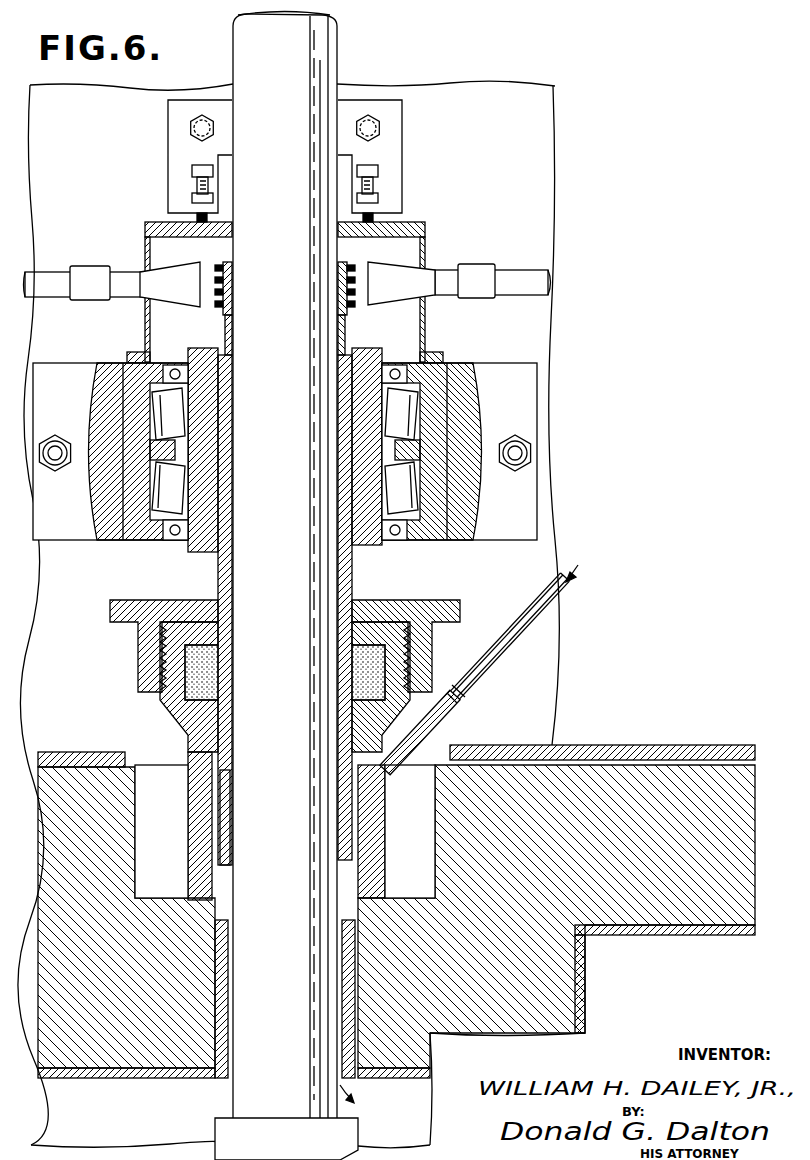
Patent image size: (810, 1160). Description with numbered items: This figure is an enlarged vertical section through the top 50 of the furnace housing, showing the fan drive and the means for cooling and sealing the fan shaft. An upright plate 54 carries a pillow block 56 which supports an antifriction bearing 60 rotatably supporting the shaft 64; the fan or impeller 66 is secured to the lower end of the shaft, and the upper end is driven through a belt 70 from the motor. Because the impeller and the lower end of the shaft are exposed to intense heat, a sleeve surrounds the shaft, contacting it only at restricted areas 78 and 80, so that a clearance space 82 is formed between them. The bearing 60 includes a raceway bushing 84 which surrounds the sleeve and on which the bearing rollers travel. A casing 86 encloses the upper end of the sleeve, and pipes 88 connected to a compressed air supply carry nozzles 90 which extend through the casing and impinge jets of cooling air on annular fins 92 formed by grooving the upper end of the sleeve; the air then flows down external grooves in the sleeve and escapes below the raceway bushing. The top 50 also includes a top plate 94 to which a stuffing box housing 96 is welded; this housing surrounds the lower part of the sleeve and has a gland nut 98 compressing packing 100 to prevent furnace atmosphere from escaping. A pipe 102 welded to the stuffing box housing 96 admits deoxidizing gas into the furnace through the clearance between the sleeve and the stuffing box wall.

The top 50 is at (396, 896).
The upright plate 54 is at (535, 160).
The pillow block 56 is at (465, 384).
The antifriction bearing 60 is at (160, 427).
The shaft 64 is at (320, 62).
The fan or impeller 66 is at (345, 1130).
The belt 70 is at (222, 583).
The restricted area 78 is at (240, 810).
The restricted area 80 is at (240, 265).
The clearance space 82 is at (234, 724).
The raceway bushing 84 is at (383, 352).
The casing 86 is at (425, 242).
The pipe 88 is at (45, 282).
The nozzle 90 is at (165, 281).
The annular fin 92 is at (216, 283).
The top plate 94 is at (596, 748).
The stuffing box housing 96 is at (378, 826).
The gland nut 98 is at (140, 659).
The packing 100 is at (168, 700).
The pipe 102 is at (536, 603).